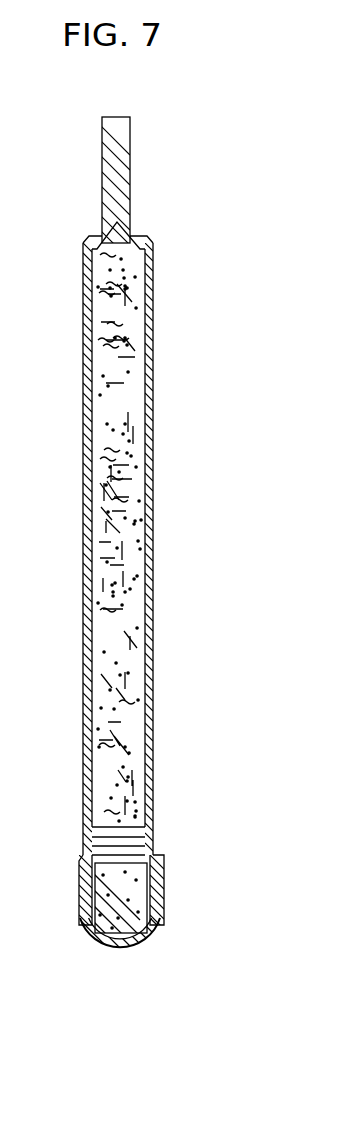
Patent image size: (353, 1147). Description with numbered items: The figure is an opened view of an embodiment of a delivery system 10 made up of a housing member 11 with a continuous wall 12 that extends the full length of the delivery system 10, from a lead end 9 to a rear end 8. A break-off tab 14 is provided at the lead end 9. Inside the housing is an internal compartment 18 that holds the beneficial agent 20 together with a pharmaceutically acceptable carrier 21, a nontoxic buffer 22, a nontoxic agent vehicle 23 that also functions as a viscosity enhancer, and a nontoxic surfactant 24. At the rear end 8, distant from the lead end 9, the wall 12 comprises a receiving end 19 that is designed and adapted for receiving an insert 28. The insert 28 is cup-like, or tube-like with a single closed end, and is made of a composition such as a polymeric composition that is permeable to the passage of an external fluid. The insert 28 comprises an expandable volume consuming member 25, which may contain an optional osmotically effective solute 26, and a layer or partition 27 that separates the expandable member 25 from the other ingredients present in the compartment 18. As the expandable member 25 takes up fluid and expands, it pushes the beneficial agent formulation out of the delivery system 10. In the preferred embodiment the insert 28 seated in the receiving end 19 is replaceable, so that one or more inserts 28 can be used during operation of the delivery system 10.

The rear end 8 is at (118, 950).
The lead end 9 is at (136, 238).
The delivery system 10 is at (216, 277).
The housing member 11 is at (153, 338).
The wall 12 is at (153, 386).
The break-off tab 14 is at (130, 139).
The internal compartment 18 is at (134, 426).
The receiving end 19 is at (160, 925).
The beneficial agent 20 is at (132, 456).
The pharmaceutically acceptable carrier 21 is at (110, 500).
The nontoxic buffer 22 is at (106, 381).
The nontoxic agent vehicle 23 is at (101, 577).
The nontoxic surfactant 24 is at (118, 690).
The expandable volume consuming member 25 is at (136, 893).
The osmotically effective solute 26 is at (100, 908).
The layer or partition 27 is at (105, 828).
The insert 28 is at (90, 940).